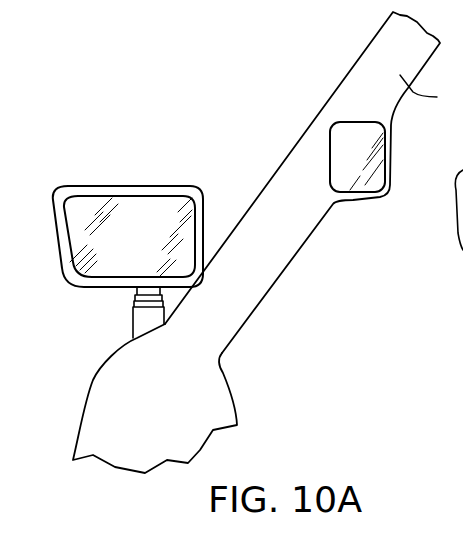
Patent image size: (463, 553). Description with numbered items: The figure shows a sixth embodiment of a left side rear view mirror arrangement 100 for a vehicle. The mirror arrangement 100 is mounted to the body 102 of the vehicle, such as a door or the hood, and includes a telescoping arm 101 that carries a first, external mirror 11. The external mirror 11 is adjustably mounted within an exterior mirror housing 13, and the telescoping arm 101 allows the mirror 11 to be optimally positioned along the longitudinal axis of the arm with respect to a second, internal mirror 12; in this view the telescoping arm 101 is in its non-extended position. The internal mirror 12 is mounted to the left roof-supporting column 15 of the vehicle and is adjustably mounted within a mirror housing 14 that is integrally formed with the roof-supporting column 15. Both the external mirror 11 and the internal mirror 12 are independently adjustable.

The mirror arrangement 100 is at (233, 90).
The first mirror 11 is at (160, 208).
The second internal mirror 12 is at (360, 180).
The exterior mirror housing 13 is at (110, 186).
The mirror housing 14 is at (397, 144).
The roof-supporting column 15 is at (430, 90).
The telescoping arm 101 is at (132, 320).
The body 102 is at (170, 400).